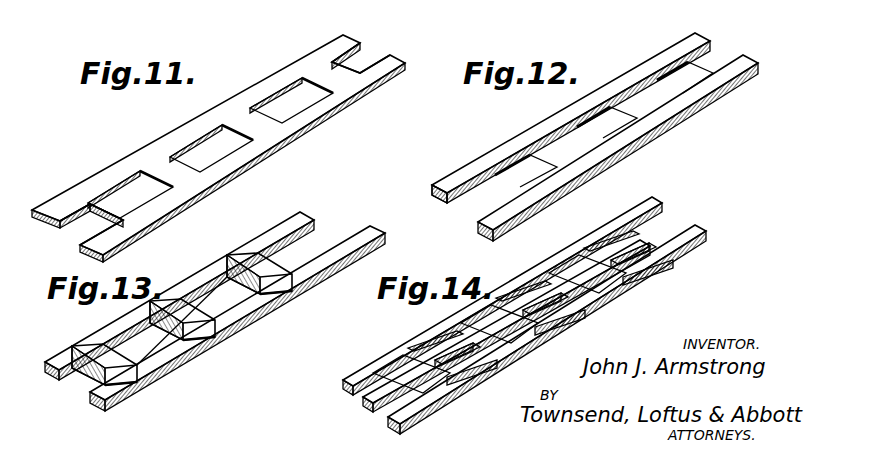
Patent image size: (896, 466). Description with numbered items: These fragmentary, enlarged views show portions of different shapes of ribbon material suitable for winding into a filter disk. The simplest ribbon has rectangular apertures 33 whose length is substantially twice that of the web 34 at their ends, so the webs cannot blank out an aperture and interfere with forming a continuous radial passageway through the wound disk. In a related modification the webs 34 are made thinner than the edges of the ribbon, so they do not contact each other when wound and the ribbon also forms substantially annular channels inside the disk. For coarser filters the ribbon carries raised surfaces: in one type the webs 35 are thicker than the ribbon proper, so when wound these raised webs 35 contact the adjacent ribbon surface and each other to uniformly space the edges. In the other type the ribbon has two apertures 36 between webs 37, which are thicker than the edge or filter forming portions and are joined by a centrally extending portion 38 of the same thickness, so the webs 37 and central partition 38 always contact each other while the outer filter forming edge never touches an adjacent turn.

In FIG. 11, the apertures 33 is at (287, 100).
In FIG. 12, the apertures 33 is at (627, 153).
In FIG. 13, the apertures 33 is at (148, 348).
In FIG. 11, the web 34 is at (333, 64).
In FIG. 12, the web 34 is at (558, 118).
In FIG. 13, the webs 35 is at (153, 318).
In FIG. 14, the apertures 36 is at (530, 282).
In FIG. 14, the webs 37 is at (583, 272).
In FIG. 14, the centrally extending portion 38 is at (597, 227).